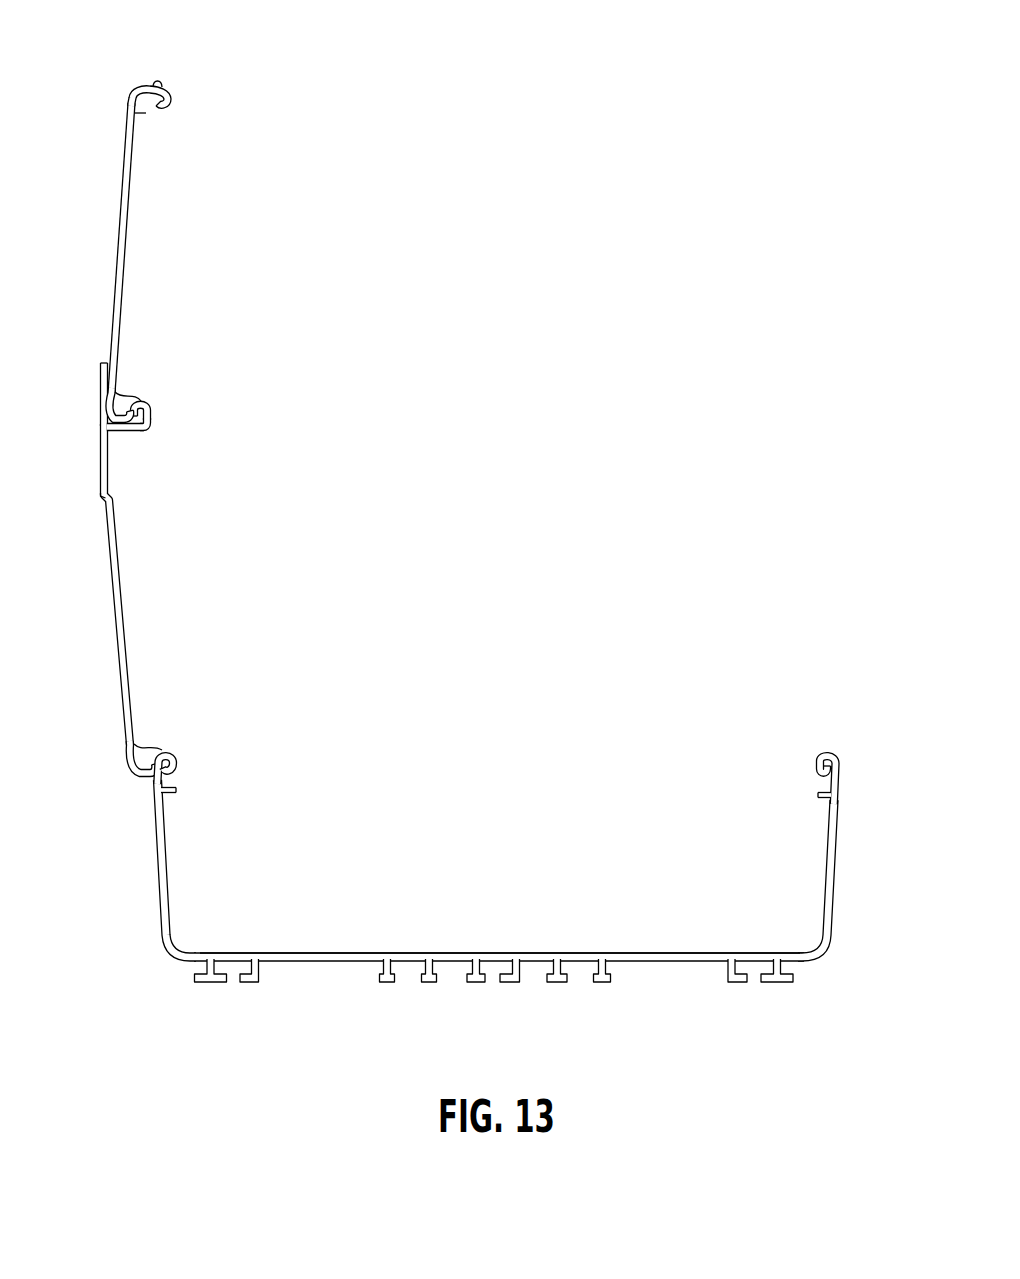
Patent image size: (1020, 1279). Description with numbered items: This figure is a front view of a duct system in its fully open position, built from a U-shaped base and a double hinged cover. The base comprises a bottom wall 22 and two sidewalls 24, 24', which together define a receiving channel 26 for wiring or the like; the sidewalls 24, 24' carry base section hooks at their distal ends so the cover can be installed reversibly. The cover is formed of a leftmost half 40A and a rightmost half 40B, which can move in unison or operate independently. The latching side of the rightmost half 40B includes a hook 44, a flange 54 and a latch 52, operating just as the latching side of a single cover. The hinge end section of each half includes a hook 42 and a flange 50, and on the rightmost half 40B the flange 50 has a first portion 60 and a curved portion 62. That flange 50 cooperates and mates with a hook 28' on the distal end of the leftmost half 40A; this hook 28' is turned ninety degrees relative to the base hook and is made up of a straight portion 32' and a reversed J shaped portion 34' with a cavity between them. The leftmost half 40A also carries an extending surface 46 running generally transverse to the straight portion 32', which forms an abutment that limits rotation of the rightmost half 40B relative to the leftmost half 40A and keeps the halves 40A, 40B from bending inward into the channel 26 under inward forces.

The bottom wall 22 is at (327, 962).
The sidewall 24 is at (225, 856).
The sidewall 24' is at (781, 851).
The receiving channel 26 is at (608, 920).
The hook 28' is at (205, 445).
The straight portion 32' is at (165, 463).
The reversed J shaped portion 34' is at (216, 396).
The leftmost half 40A is at (121, 595).
The rightmost half 40B is at (126, 248).
The hook 42 is at (108, 431).
The hook 44 is at (141, 86).
The extending surface 46 is at (100, 388).
The flange 50 is at (113, 391).
The latch 52 is at (158, 80).
The flange 54 is at (143, 115).
The first portion 60 is at (130, 391).
The curved portion 62 is at (141, 400).